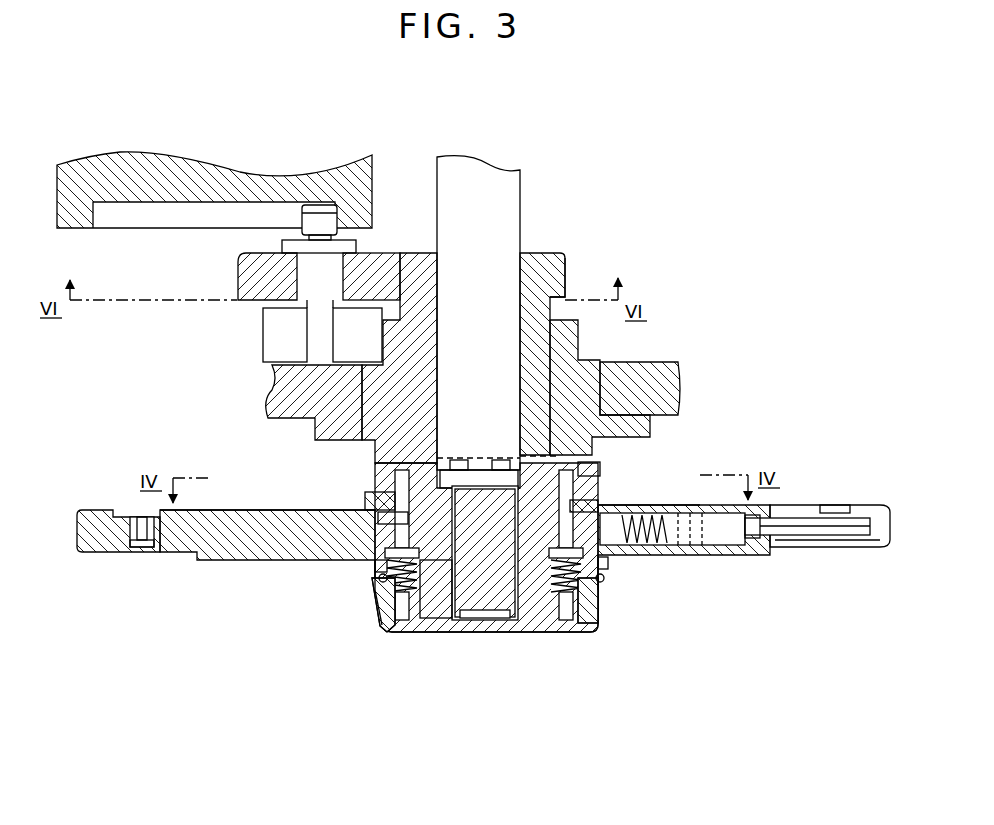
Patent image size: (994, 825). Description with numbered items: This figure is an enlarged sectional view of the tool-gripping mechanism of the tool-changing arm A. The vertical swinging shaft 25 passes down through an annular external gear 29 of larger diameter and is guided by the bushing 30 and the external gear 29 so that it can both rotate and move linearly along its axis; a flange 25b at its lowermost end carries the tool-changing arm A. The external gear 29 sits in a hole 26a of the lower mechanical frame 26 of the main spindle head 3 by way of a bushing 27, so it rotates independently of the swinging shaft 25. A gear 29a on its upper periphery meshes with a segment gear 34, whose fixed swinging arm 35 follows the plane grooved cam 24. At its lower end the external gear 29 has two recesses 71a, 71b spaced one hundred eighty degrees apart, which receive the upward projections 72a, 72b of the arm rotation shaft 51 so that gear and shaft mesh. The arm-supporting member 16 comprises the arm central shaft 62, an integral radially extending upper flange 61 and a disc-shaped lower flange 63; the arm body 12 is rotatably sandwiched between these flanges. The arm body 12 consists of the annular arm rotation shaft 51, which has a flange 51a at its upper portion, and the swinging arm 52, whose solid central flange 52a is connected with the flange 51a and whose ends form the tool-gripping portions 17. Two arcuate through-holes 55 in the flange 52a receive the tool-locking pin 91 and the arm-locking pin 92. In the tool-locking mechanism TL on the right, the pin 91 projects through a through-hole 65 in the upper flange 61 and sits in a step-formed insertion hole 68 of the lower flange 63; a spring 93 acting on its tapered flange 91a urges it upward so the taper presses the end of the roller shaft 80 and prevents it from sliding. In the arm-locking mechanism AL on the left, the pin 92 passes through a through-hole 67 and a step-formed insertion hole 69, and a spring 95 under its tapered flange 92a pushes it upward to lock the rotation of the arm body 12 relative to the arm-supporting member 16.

The main spindle head 3 is at (270, 392).
The arm body 12 is at (660, 565).
The arm-supporting member 16 is at (378, 632).
The tool-gripping portion 17 is at (110, 566).
The cam 24 is at (102, 157).
The swinging shaft 25 is at (522, 190).
The flange 25b is at (450, 467).
The lower mechanical frame 26 is at (580, 342).
The hole 26a is at (578, 385).
The bushing 27 is at (395, 330).
The external gear 29 is at (528, 252).
The gear 29a is at (565, 275).
The bushing 30 is at (432, 256).
The segment gear 34 is at (238, 279).
The swinging arm 35 is at (300, 218).
The arm rotation shaft 51 is at (545, 612).
The flange 51a is at (402, 625).
The swinging arm 52 is at (705, 556).
The flange 52a is at (437, 605).
The arcuate through-holes 55 is at (360, 512).
The upper flange 61 is at (380, 515).
The arm central shaft 62 is at (462, 605).
The lower flange 63 is at (485, 622).
The through-holes 65 is at (578, 508).
The through-holes 67 is at (390, 520).
The step-formed insertion hole 68 is at (588, 615).
The step-formed insertion hole 69 is at (372, 612).
The recess 71a is at (437, 458).
The recess 71b is at (560, 456).
The projection 72a is at (370, 495).
The projection 72b is at (600, 470).
The roller shaft 80 is at (748, 540).
The tool-locking pin 91 is at (605, 565).
The flange 91a is at (604, 582).
The arm-locking pin 92 is at (375, 566).
The flange 92a is at (380, 580).
The spring 93 is at (565, 625).
The spring 95 is at (388, 600).
The arm-locking mechanism AL is at (372, 592).
The tool-locking mechanism TL is at (592, 590).
The tool-changing arm A is at (282, 657).